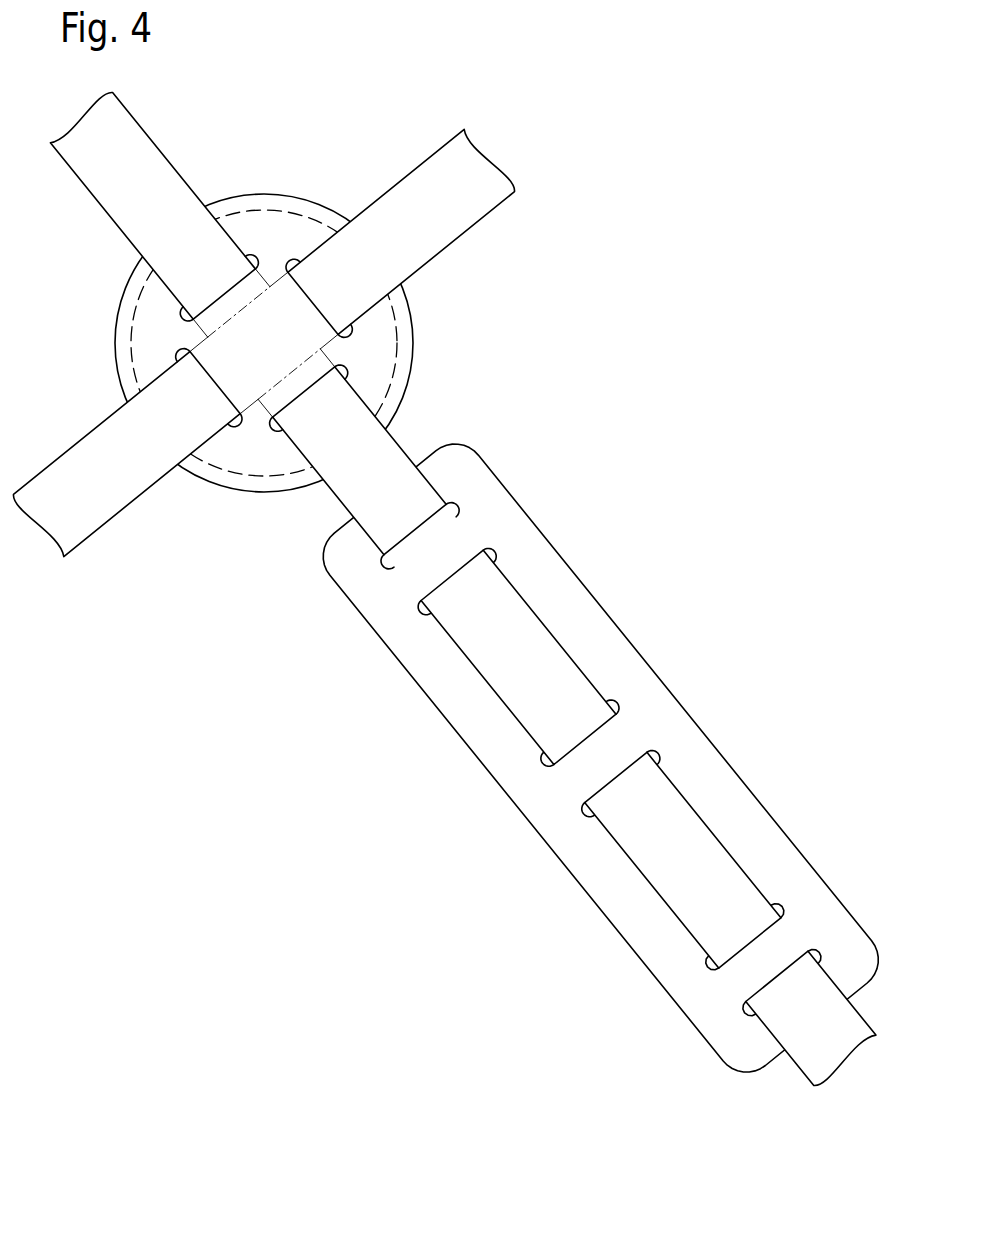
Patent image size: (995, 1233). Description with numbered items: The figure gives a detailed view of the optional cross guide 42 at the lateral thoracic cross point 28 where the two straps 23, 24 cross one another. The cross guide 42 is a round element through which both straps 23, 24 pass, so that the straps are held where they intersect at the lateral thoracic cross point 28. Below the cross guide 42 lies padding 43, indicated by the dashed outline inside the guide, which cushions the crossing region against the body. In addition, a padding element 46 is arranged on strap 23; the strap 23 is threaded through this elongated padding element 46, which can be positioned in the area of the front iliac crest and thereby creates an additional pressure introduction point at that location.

The strap 23 is at (120, 195).
The strap 24 is at (110, 501).
The lateral thoracic cross point 28 is at (292, 177).
The cross guide 42 is at (405, 363).
The padding 43 is at (385, 348).
The padding element 46 is at (547, 572).